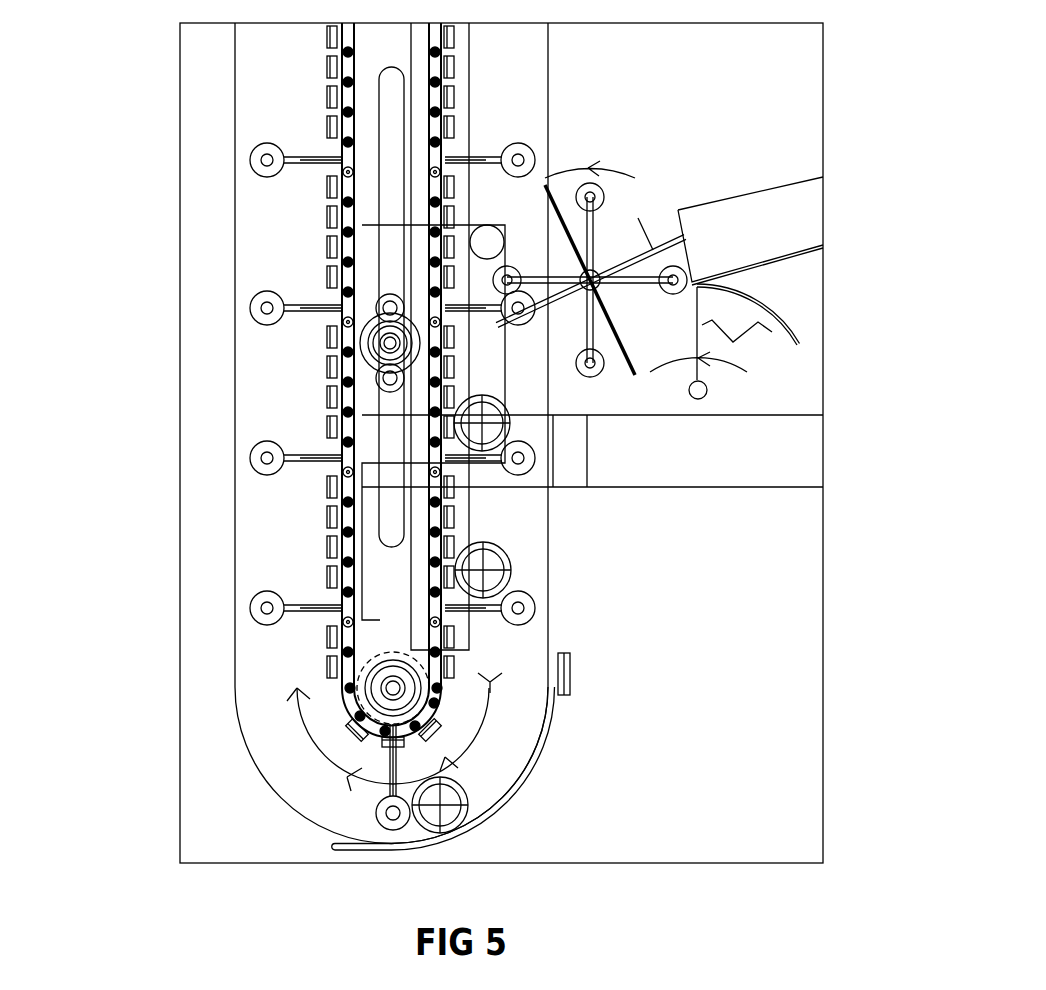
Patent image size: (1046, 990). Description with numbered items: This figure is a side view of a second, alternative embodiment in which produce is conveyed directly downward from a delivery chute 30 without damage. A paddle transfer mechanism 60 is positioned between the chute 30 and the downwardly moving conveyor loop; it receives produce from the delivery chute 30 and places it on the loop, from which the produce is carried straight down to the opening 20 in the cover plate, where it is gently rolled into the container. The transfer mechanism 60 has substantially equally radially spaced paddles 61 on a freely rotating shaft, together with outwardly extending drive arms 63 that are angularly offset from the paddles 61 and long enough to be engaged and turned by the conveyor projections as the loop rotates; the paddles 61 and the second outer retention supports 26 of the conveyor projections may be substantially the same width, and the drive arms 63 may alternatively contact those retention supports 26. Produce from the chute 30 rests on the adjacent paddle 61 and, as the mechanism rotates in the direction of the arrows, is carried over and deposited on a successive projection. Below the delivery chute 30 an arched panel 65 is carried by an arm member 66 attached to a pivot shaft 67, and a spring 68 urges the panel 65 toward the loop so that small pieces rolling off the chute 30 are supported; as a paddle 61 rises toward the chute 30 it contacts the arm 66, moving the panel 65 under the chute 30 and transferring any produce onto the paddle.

The opening 20 is at (315, 837).
The second outer retention support 26 is at (252, 302).
The delivery chute 30 is at (782, 233).
The paddle transfer mechanism 60 is at (668, 186).
The paddles 61 is at (597, 190).
The drive arms 63 is at (638, 218).
The arched panel 65 is at (767, 304).
The arm member 66 is at (712, 350).
The pivot shaft 67 is at (707, 392).
The spring 68 is at (772, 330).